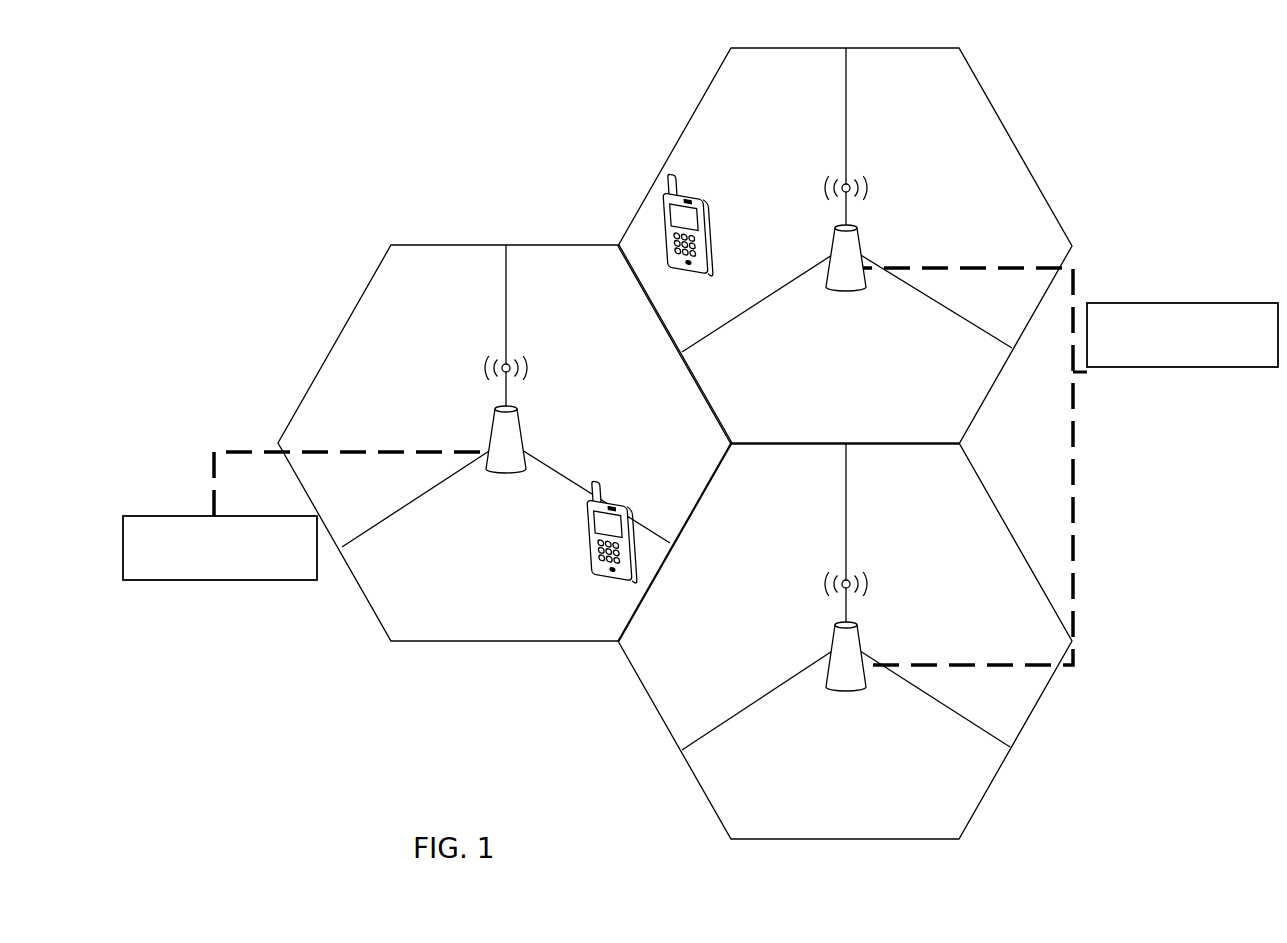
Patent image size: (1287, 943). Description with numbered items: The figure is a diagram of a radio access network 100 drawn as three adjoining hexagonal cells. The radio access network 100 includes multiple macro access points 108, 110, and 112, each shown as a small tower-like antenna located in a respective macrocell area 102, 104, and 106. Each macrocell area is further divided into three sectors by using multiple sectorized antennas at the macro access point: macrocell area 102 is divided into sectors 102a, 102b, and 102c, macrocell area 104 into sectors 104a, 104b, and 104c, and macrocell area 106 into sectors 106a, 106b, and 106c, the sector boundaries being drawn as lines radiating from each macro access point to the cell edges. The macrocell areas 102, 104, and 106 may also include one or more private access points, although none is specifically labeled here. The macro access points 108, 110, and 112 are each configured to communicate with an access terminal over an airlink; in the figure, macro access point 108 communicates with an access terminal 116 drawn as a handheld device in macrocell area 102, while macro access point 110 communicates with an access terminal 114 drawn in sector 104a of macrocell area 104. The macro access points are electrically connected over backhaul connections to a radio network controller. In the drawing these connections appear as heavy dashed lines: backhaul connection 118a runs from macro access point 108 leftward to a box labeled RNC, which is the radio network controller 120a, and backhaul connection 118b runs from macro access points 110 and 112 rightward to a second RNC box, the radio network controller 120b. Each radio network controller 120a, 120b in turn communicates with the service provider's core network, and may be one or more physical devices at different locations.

The radio access network 100 is at (311, 134).
The macrocell area 102 is at (366, 288).
The sector 102a is at (427, 406).
The sector 102b is at (622, 406).
The sector 102c is at (530, 586).
The macrocell area 104 is at (1015, 149).
The sector 104a is at (770, 208).
The sector 104b is at (964, 208).
The sector 104c is at (874, 383).
The macrocell area 106 is at (682, 752).
The sector 106a is at (770, 609).
The sector 106b is at (964, 609).
The sector 106c is at (872, 788).
The macro access point 108 is at (503, 472).
The macro access point 110 is at (848, 291).
The macro access point 112 is at (847, 690).
The access terminal 114 is at (712, 260).
The access terminal 116 is at (605, 578).
The backhaul connection 118a is at (210, 457).
The backhaul connection 118b is at (1074, 556).
The radio network controller 120a is at (162, 568).
The radio network controller 120b is at (1240, 355).